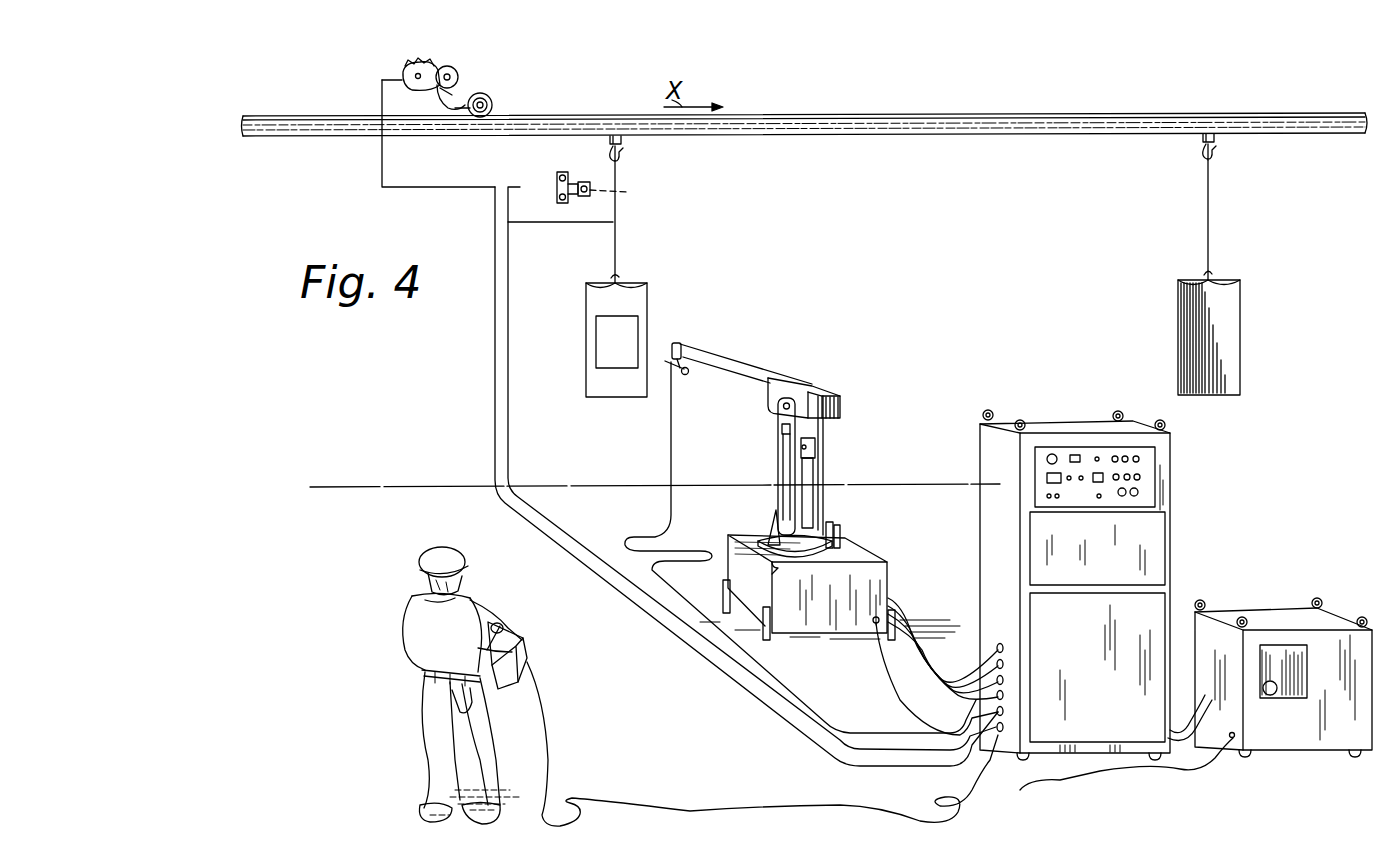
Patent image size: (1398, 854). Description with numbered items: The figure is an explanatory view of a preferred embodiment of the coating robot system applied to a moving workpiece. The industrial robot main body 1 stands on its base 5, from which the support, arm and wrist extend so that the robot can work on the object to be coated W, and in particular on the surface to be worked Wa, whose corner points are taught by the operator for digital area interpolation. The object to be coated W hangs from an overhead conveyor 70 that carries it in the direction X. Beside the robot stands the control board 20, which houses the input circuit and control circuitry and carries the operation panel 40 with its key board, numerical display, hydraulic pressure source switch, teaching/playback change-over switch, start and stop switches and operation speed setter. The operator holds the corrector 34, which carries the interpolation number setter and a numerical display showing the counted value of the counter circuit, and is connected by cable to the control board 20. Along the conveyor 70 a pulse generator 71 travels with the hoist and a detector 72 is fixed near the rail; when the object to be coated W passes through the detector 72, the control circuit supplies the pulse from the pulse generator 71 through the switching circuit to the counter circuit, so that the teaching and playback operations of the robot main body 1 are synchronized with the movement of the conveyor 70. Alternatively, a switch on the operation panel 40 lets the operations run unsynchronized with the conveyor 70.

The industrial robot main body 1 is at (846, 366).
The base 5 is at (855, 586).
The control board 20 is at (1172, 563).
The corrector 34 is at (530, 651).
The operation panel 40 is at (1148, 471).
The conveyor 70 is at (1068, 137).
The pulse generator 71 is at (408, 88).
The detector 72 is at (577, 183).
The object to be coated W is at (586, 338).
The surface to be worked Wa is at (638, 340).